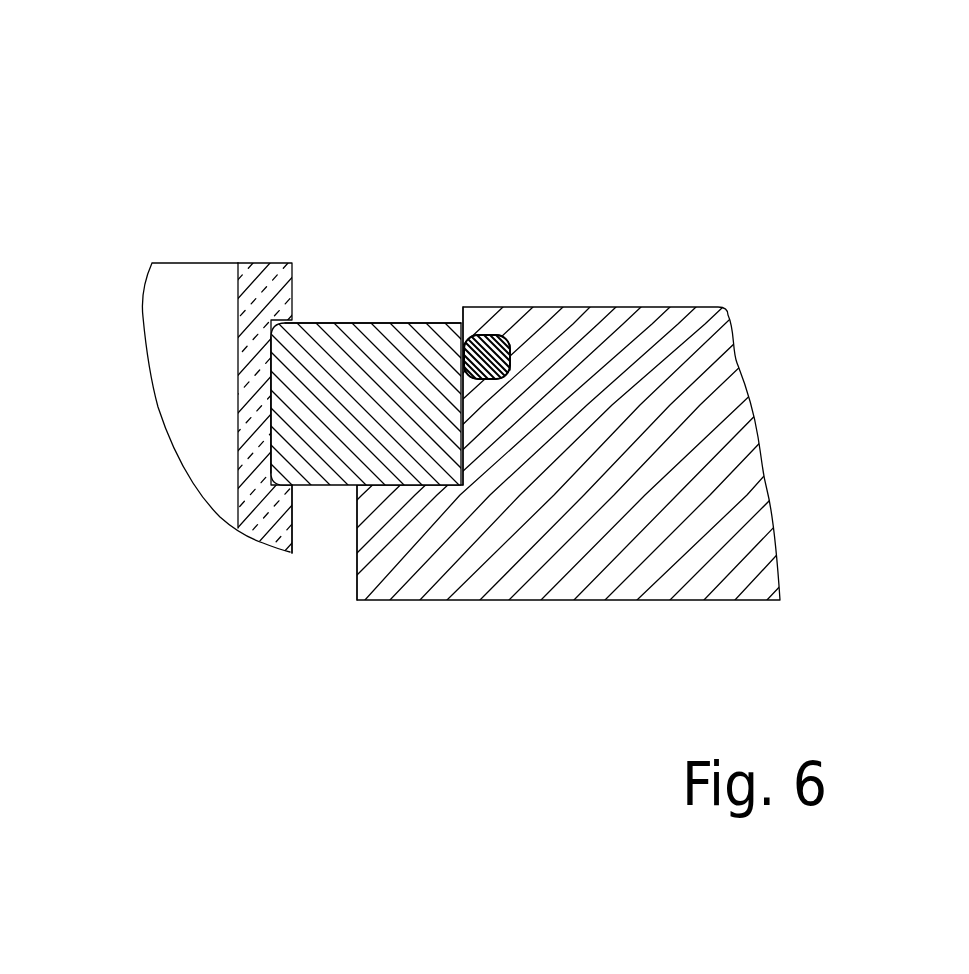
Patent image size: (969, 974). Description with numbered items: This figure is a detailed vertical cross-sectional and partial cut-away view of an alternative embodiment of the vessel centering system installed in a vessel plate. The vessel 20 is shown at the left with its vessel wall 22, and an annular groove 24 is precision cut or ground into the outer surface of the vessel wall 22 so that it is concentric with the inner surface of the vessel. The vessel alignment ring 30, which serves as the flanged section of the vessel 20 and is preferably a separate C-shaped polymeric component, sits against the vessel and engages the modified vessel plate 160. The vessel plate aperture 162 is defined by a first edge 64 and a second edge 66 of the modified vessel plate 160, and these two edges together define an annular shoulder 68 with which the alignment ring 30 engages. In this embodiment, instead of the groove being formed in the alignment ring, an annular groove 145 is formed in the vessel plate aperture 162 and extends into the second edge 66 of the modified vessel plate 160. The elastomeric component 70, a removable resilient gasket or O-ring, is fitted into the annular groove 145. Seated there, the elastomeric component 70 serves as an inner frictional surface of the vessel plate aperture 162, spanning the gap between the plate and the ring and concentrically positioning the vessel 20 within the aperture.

The vessel 20 is at (116, 293).
The vessel wall 22 is at (258, 263).
The annular groove 24 is at (268, 400).
The vessel alignment ring 30 is at (311, 566).
The first edge 64 is at (424, 485).
The second edge 66 is at (467, 437).
The annular shoulder 68 is at (357, 566).
The elastomeric component 70 is at (483, 345).
The annular groove 145 is at (510, 357).
The modified vessel plate 160 is at (695, 307).
The vessel plate aperture 162 is at (443, 256).